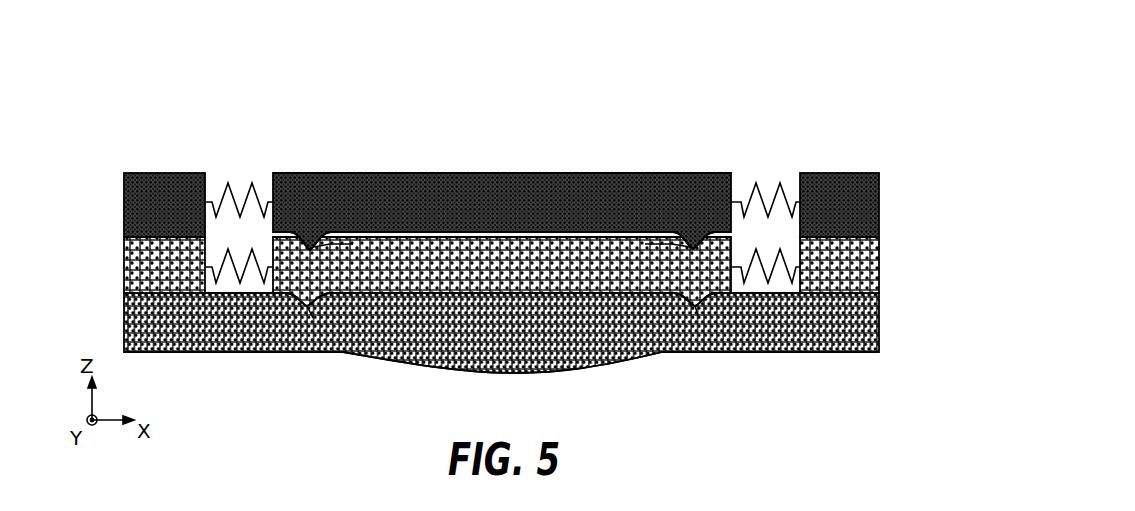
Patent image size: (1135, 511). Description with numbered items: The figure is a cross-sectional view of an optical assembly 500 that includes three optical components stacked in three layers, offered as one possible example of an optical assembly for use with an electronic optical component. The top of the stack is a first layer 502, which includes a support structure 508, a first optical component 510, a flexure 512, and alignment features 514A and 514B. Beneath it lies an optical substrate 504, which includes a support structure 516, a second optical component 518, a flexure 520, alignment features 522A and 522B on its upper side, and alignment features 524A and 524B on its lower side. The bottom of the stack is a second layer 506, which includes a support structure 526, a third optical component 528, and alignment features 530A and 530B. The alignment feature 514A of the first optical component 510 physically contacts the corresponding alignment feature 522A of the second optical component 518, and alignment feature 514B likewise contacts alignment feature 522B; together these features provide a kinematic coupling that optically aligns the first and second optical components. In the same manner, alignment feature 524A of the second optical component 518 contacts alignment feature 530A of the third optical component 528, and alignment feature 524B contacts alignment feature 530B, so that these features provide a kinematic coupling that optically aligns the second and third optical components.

The optical assembly 500 is at (866, 76).
The first layer 502 is at (542, 192).
The optical substrate 504 is at (501, 242).
The second layer 506 is at (501, 350).
The support structure 508 is at (155, 185).
The first optical component 510 is at (505, 182).
The flexure 512 is at (250, 184).
The alignment feature 514A is at (315, 232).
The alignment feature 514B is at (698, 232).
The support structure 516 is at (148, 251).
The second optical component 518 is at (530, 262).
The flexure 520 is at (213, 276).
The alignment feature 522A is at (314, 247).
The alignment feature 522B is at (690, 247).
The alignment feature 524A is at (310, 293).
The alignment feature 524B is at (696, 296).
The support structure 526 is at (148, 327).
The third optical component 528 is at (507, 365).
The alignment feature 530A is at (313, 306).
The alignment feature 530B is at (699, 306).